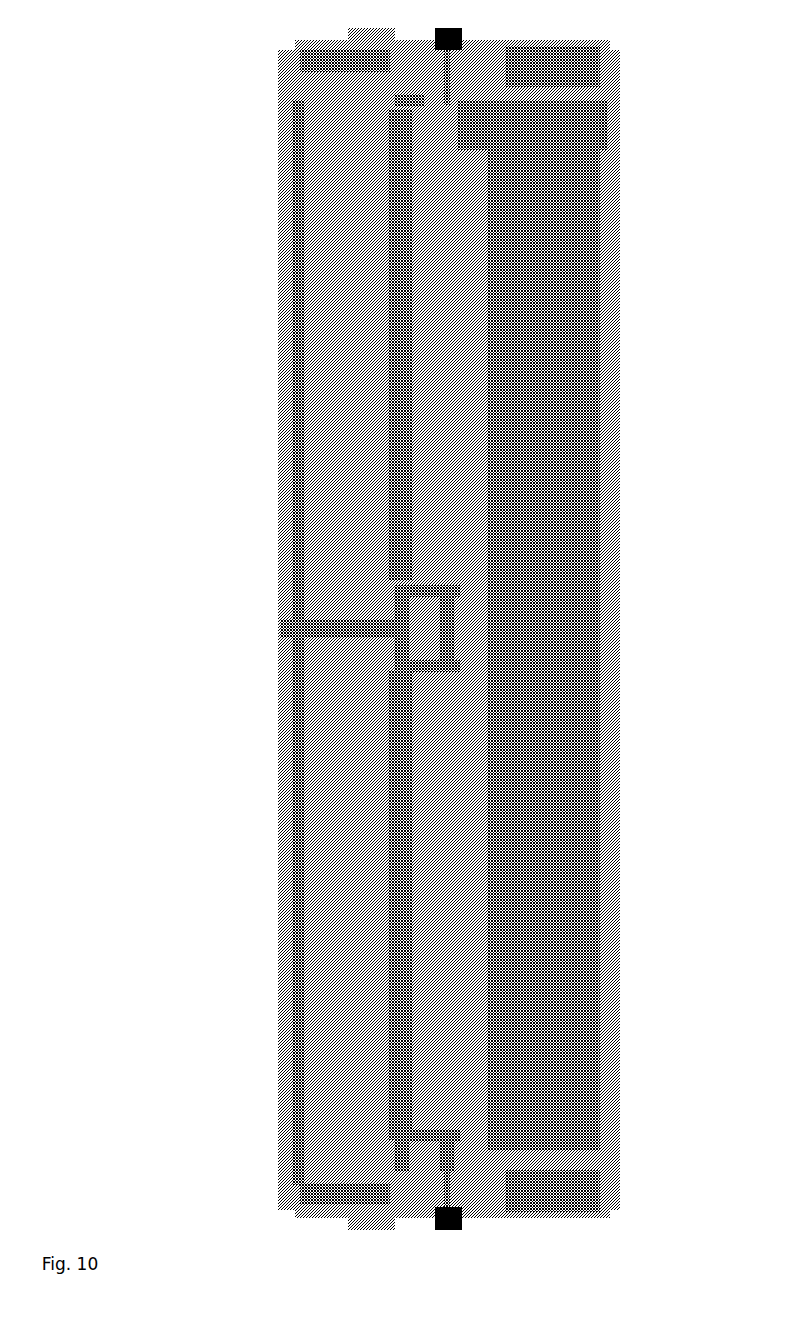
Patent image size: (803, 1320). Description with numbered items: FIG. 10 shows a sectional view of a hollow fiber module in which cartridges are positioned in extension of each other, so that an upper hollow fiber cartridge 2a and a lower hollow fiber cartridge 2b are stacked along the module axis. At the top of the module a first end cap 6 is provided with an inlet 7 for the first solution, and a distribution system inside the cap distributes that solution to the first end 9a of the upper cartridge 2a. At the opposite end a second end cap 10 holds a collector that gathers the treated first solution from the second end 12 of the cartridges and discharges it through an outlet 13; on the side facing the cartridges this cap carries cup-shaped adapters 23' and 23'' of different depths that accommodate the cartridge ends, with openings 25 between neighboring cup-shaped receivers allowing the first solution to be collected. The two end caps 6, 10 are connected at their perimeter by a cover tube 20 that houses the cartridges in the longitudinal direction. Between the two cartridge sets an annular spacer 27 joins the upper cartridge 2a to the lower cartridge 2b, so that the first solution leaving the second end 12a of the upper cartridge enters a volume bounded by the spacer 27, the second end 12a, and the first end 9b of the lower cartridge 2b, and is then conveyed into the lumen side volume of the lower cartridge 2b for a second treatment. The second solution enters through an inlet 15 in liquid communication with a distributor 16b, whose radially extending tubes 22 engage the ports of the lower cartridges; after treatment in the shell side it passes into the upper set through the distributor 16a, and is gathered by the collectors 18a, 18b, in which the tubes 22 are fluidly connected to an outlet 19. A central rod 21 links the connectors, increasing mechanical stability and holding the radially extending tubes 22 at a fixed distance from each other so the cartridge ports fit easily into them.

The upper hollow fiber cartridge 2a is at (328, 383).
The lower hollow fiber cartridge 2b is at (330, 928).
The first end cap 6 is at (292, 60).
The inlet 7 is at (376, 28).
The first end of upper hollow fiber cartridge 9a is at (312, 78).
The first end of lower hollow fiber cartridge 9b is at (316, 656).
The second end cap 10 is at (310, 1190).
The second end of hollow fiber cartridge 12 is at (318, 1170).
The second end of upper hollow fiber cartridge 12a is at (322, 592).
The outlet 13 is at (372, 1230).
The inlet for the second solution 15 is at (445, 1236).
The distributor of upper set 16a is at (455, 575).
The distributor of lower set 16b is at (455, 1116).
The collector of upper set 18a is at (455, 137).
The collector of lower set 18b is at (455, 690).
The outlet 19 is at (448, 28).
The cover tube 20 is at (282, 290).
The central rod 21 is at (470, 453).
The tube 22 is at (405, 98).
The cup-shaped adapter 23' is at (602, 1179).
The cup-shaped adapter 23'' is at (275, 1199).
The opening 25 is at (528, 50).
The annular spacer 27 is at (303, 634).